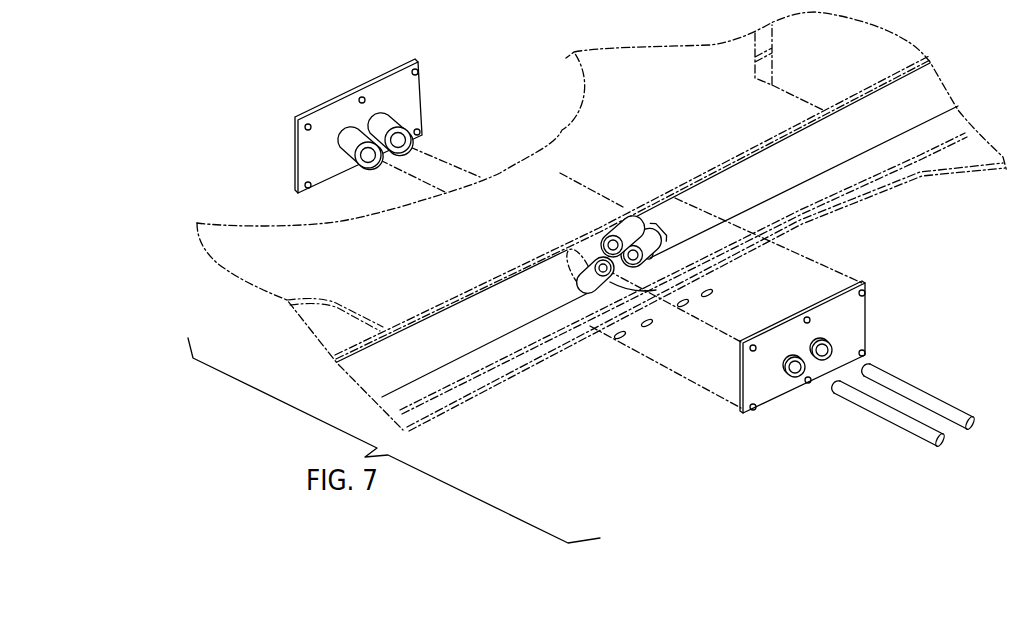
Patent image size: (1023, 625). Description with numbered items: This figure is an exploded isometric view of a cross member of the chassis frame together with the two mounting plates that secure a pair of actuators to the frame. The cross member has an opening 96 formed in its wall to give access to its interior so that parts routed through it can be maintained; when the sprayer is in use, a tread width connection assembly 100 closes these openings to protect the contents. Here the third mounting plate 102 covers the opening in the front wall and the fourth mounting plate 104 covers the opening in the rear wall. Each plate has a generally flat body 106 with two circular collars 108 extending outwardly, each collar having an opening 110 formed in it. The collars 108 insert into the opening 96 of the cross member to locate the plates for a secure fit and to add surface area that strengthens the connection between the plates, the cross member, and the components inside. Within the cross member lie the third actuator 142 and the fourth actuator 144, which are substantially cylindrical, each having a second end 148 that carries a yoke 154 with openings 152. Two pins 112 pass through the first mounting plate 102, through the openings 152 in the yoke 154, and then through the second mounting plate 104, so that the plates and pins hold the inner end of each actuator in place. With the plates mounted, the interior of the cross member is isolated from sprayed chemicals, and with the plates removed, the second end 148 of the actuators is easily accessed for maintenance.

The opening 96 is at (648, 327).
The tread width connection assembly 100 is at (836, 257).
The third mounting plate 102 is at (390, 87).
The fourth mounting plate 104 is at (755, 383).
The flat body 106 is at (413, 90).
The collar 108 is at (390, 123).
The opening 110 is at (407, 140).
The pin 112 is at (917, 393).
The third actuator 142 is at (468, 341).
The fourth actuator 144 is at (720, 193).
The second end 148 is at (618, 216).
The opening 152 is at (610, 271).
The yoke 154 is at (596, 280).